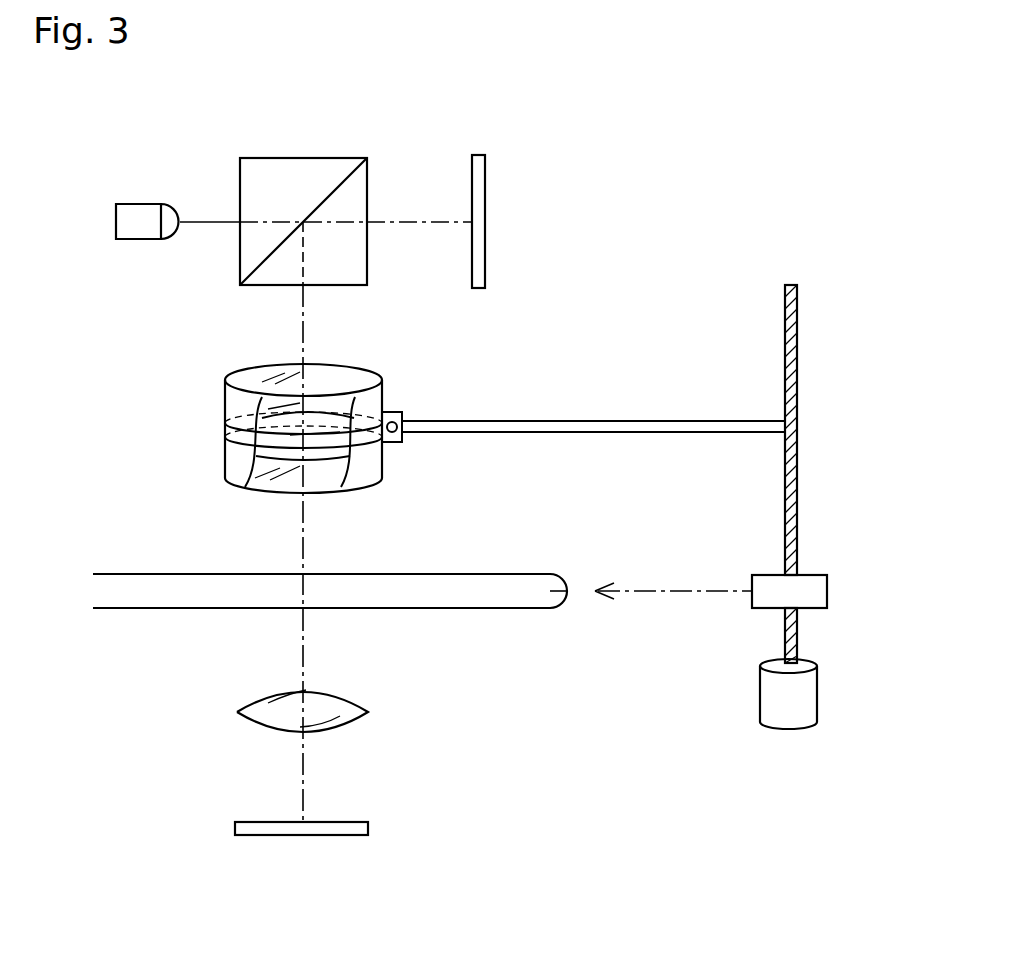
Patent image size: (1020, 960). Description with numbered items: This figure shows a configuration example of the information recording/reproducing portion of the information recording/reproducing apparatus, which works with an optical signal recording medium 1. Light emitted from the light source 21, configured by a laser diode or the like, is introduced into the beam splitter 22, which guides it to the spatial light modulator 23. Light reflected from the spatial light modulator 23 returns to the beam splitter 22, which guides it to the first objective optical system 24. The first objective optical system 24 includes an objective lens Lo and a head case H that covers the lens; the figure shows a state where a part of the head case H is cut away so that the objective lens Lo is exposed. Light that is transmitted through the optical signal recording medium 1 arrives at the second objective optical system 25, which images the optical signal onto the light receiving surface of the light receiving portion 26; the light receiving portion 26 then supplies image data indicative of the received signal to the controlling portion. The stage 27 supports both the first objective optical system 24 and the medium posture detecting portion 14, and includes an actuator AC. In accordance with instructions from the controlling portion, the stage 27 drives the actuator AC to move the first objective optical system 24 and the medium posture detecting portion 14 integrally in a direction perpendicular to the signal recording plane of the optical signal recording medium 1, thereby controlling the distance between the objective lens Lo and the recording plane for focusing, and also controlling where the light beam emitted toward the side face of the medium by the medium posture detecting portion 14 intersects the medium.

The optical signal recording medium 1 is at (552, 650).
The medium posture detecting portion 14 is at (822, 592).
The light source 21 is at (133, 203).
The beam splitter 22 is at (299, 158).
The spatial light modulator 23 is at (480, 190).
The first objective optical system 24 is at (277, 423).
The objective lens Lo is at (322, 423).
The head case H is at (365, 473).
The second objective optical system 25 is at (263, 718).
The light receiving portion 26 is at (263, 828).
The stage 27 is at (815, 378).
The actuator AC is at (790, 729).